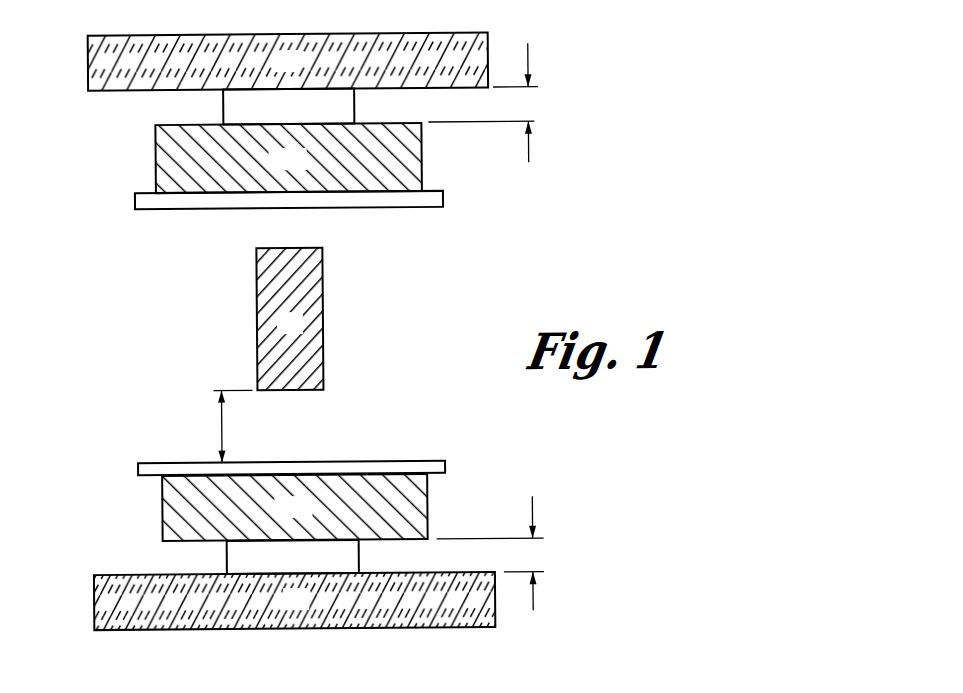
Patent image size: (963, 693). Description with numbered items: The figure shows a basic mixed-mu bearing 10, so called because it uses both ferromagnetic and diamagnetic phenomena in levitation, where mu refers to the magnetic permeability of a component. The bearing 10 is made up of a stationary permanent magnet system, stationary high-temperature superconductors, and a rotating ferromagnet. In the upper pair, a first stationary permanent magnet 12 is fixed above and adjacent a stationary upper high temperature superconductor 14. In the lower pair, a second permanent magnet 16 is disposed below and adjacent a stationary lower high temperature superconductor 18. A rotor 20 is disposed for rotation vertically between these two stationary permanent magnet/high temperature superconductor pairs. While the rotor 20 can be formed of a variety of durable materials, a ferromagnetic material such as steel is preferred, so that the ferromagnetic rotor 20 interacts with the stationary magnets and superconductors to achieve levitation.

The mixed-mu bearing 10 is at (577, 48).
The first stationary permanent magnet 12 is at (110, 66).
The upper high temperature superconductor 14 is at (175, 162).
The second permanent magnet 16 is at (119, 601).
The lower high temperature superconductor 18 is at (168, 506).
The rotor 20 is at (278, 283).